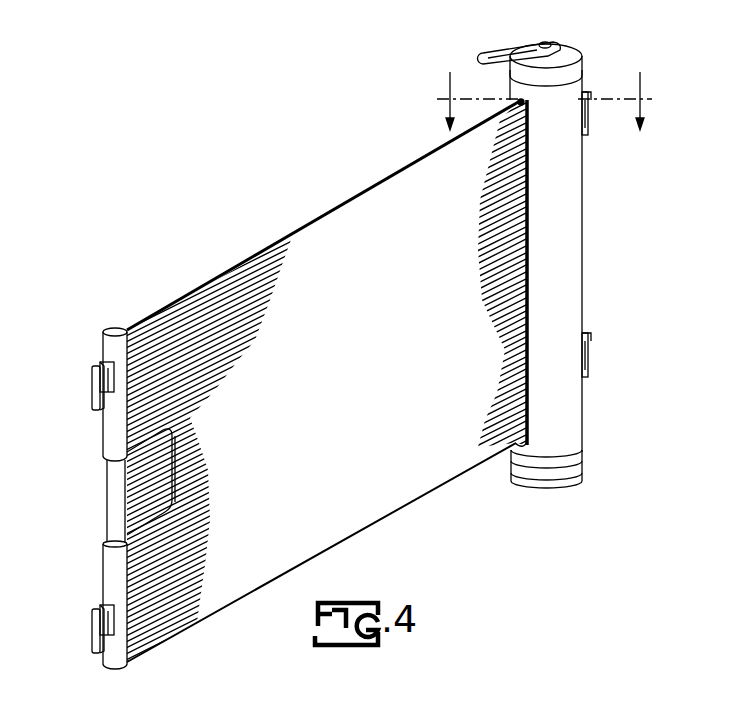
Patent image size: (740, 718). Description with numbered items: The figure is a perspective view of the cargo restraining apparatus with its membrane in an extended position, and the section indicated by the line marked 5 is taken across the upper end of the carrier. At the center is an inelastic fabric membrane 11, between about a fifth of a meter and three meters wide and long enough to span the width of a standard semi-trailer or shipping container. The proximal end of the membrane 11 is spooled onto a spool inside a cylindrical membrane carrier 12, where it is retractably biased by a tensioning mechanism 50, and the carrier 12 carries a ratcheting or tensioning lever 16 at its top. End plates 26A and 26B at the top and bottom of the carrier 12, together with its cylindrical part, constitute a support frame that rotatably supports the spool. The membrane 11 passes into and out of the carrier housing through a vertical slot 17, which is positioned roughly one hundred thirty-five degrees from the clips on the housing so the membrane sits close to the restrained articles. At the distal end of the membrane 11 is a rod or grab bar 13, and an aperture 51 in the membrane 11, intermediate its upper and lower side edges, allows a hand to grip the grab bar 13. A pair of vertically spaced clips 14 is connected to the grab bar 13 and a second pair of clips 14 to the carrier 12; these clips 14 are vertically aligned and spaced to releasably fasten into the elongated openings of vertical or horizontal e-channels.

The inelastic fabric membrane 11 is at (332, 252).
The membrane carrier 12 is at (575, 228).
The grab bar 13 is at (107, 518).
The clips 14 is at (589, 127).
The tensioning lever 16 is at (502, 53).
The vertical slot 17 is at (575, 452).
The end plate 26A is at (579, 44).
The end plate 26B is at (562, 488).
The tensioning mechanism 50 is at (543, 41).
The aperture 51 is at (147, 484).
The section line 5- 5 is at (542, 101).